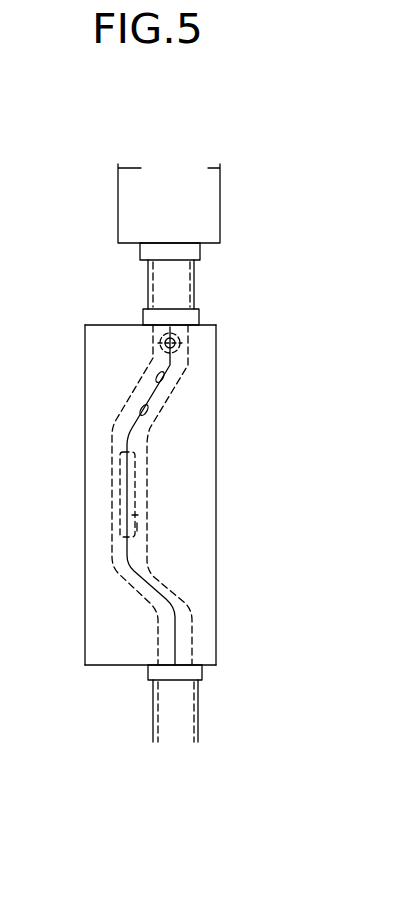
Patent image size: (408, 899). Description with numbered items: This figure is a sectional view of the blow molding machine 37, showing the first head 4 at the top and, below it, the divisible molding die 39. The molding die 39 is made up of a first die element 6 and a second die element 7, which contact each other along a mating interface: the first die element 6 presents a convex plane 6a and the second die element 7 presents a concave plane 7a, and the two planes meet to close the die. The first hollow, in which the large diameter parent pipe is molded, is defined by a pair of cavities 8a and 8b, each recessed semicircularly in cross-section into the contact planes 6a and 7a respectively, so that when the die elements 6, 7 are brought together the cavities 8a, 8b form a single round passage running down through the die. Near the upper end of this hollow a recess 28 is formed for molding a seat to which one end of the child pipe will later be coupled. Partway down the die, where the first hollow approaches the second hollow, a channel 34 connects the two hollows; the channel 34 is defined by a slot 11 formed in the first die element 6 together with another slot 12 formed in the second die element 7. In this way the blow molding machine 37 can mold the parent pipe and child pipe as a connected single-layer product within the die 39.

The first head 4 is at (121, 182).
The first die element 6 is at (84, 604).
The convex plane 6a is at (148, 385).
The second die element 7 is at (218, 607).
The concave plane 7a is at (171, 367).
The cavity 8a is at (113, 420).
The cavity 8b is at (148, 433).
The slot 11 is at (120, 462).
The slot 12 is at (135, 515).
The recess 28 is at (183, 337).
The channel 34 is at (137, 527).
The blow molding machine 37 is at (185, 192).
The divisible molding die 39 is at (146, 489).